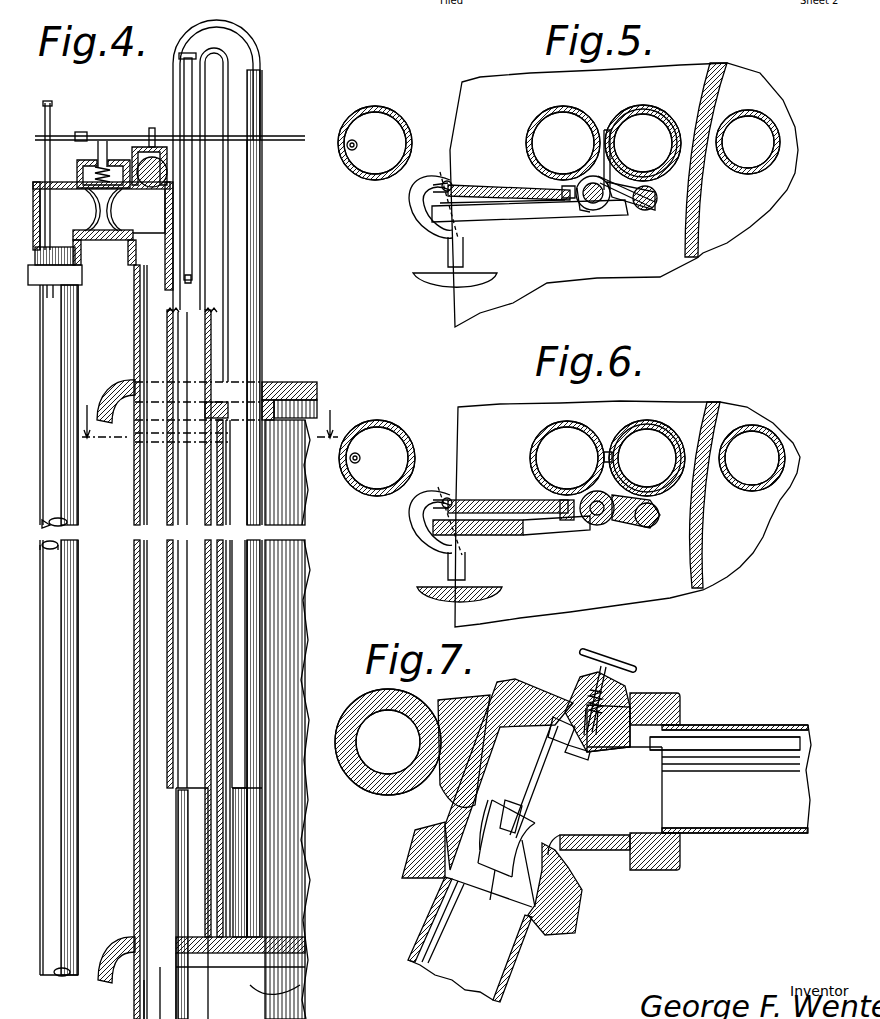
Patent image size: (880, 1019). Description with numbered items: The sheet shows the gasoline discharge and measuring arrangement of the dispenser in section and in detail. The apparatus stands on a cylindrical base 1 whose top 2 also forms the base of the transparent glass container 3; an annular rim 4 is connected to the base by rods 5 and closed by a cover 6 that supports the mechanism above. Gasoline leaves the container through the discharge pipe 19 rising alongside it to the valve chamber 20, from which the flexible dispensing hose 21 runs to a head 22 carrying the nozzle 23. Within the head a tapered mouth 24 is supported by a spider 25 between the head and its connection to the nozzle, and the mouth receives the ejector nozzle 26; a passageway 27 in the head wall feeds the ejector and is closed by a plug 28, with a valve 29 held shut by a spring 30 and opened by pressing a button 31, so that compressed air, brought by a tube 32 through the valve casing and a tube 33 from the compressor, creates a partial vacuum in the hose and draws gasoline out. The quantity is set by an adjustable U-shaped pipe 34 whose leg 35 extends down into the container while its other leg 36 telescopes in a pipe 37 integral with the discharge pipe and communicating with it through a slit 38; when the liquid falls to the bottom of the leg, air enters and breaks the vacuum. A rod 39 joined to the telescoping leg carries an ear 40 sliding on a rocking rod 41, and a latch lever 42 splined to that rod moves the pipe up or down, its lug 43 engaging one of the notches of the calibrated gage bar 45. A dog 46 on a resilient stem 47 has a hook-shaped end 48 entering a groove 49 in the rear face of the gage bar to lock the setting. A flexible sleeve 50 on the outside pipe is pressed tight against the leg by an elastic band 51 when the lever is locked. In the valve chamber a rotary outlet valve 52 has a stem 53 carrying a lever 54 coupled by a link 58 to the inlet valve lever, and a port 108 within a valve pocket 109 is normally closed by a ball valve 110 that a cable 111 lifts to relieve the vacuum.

In FIG. 4, the cylindrical base 1 is at (253, 990).
In FIG. 4, the top 2 is at (290, 943).
In FIG. 4, the transparent glass container 3 is at (225, 626).
In FIG. 5, the transparent glass container 3 is at (722, 90).
In FIG. 6, the transparent glass container 3 is at (700, 520).
In FIG. 4, the annular rim 4 is at (219, 402).
In FIG. 4, the rods 5 is at (210, 410).
In FIG. 4, the cover 6 is at (304, 382).
In FIG. 4, the discharge pipe 19 is at (135, 728).
In FIG. 5, the discharge pipe 19 is at (574, 106).
In FIG. 6, the discharge pipe 19 is at (545, 435).
In FIG. 4, the valve chamber 20 is at (104, 241).
In FIG. 4, the flexible dispensing hose 21 is at (60, 592).
In FIG. 5, the flexible dispensing hose 21 is at (402, 118).
In FIG. 6, the flexible dispensing hose 21 is at (408, 437).
In FIG. 7, the flexible dispensing hose 21 is at (770, 832).
In FIG. 7, the head 22 is at (572, 853).
In FIG. 7, the nozzle 23 is at (505, 950).
In FIG. 7, the tapered mouth 24 is at (537, 815).
In FIG. 7, the valve disk 25 is at (530, 848).
In FIG. 7, the ejector nozzle 26 is at (532, 775).
In FIG. 7, the passageway 27 is at (632, 753).
In FIG. 7, the plug 28 is at (576, 752).
In FIG. 7, the valve 29 is at (560, 715).
In FIG. 7, the spring 30 is at (615, 688).
In FIG. 7, the button 31 is at (615, 658).
In FIG. 4, the tube 32 is at (49, 224).
In FIG. 5, the tube 32 is at (358, 147).
In FIG. 6, the tube 32 is at (361, 460).
In FIG. 7, the tube 32 is at (712, 738).
In FIG. 4, the tube 33 is at (50, 115).
In FIG. 4, the U-shaped pipe 34 is at (246, 58).
In FIG. 4, the leg 35 is at (248, 588).
In FIG. 5, the leg 35 is at (752, 175).
In FIG. 6, the leg 35 is at (765, 432).
In FIG. 4, the leg 36 is at (208, 350).
In FIG. 5, the leg 36 is at (668, 107).
In FIG. 6, the leg 36 is at (668, 428).
In FIG. 4, the pipe 37 is at (210, 810).
In FIG. 6, the pipe 37 is at (645, 420).
In FIG. 4, the slit 38 is at (177, 838).
In FIG. 6, the slit 38 is at (607, 450).
In FIG. 7, the slit 38 is at (388, 793).
In FIG. 4, the rod 39 is at (190, 108).
In FIG. 5, the rod 39 is at (648, 210).
In FIG. 6, the rod 39 is at (648, 527).
In FIG. 5, the ear 40 is at (630, 205).
In FIG. 6, the ear 40 is at (635, 528).
In FIG. 5, the rod 41 is at (590, 205).
In FIG. 6, the rod 41 is at (593, 520).
In FIG. 5, the latch lever 42 is at (498, 222).
In FIG. 6, the latch lever 42 is at (494, 535).
In FIG. 5, the lug 43 is at (566, 200).
In FIG. 6, the lug 43 is at (567, 522).
In FIG. 5, the gage bar 45 is at (520, 185).
In FIG. 6, the gage bar 45 is at (512, 500).
In FIG. 5, the dog 46 is at (430, 232).
In FIG. 6, the dog 46 is at (418, 525).
In FIG. 5, the resilient stem 47 is at (430, 203).
In FIG. 6, the resilient stem 47 is at (430, 525).
In FIG. 5, the hook-shaped end 48 is at (448, 181).
In FIG. 6, the hook-shaped end 48 is at (452, 498).
In FIG. 5, the groove 49 is at (455, 186).
In FIG. 6, the groove 49 is at (470, 503).
In FIG. 5, the flexible sleeve 50 is at (612, 192).
In FIG. 5, the elastic band 51 is at (625, 195).
In FIG. 4, the rotary outlet valve 52 is at (108, 208).
In FIG. 4, the stem 53 is at (106, 160).
In FIG. 4, the lever 54 is at (66, 141).
In FIG. 4, the link 58 is at (299, 141).
In FIG. 4, the port 108 is at (165, 192).
In FIG. 4, the valve pocket 109 is at (162, 147).
In FIG. 4, the ball valve 110 is at (160, 172).
In FIG. 4, the cord or cable 111 is at (151, 130).